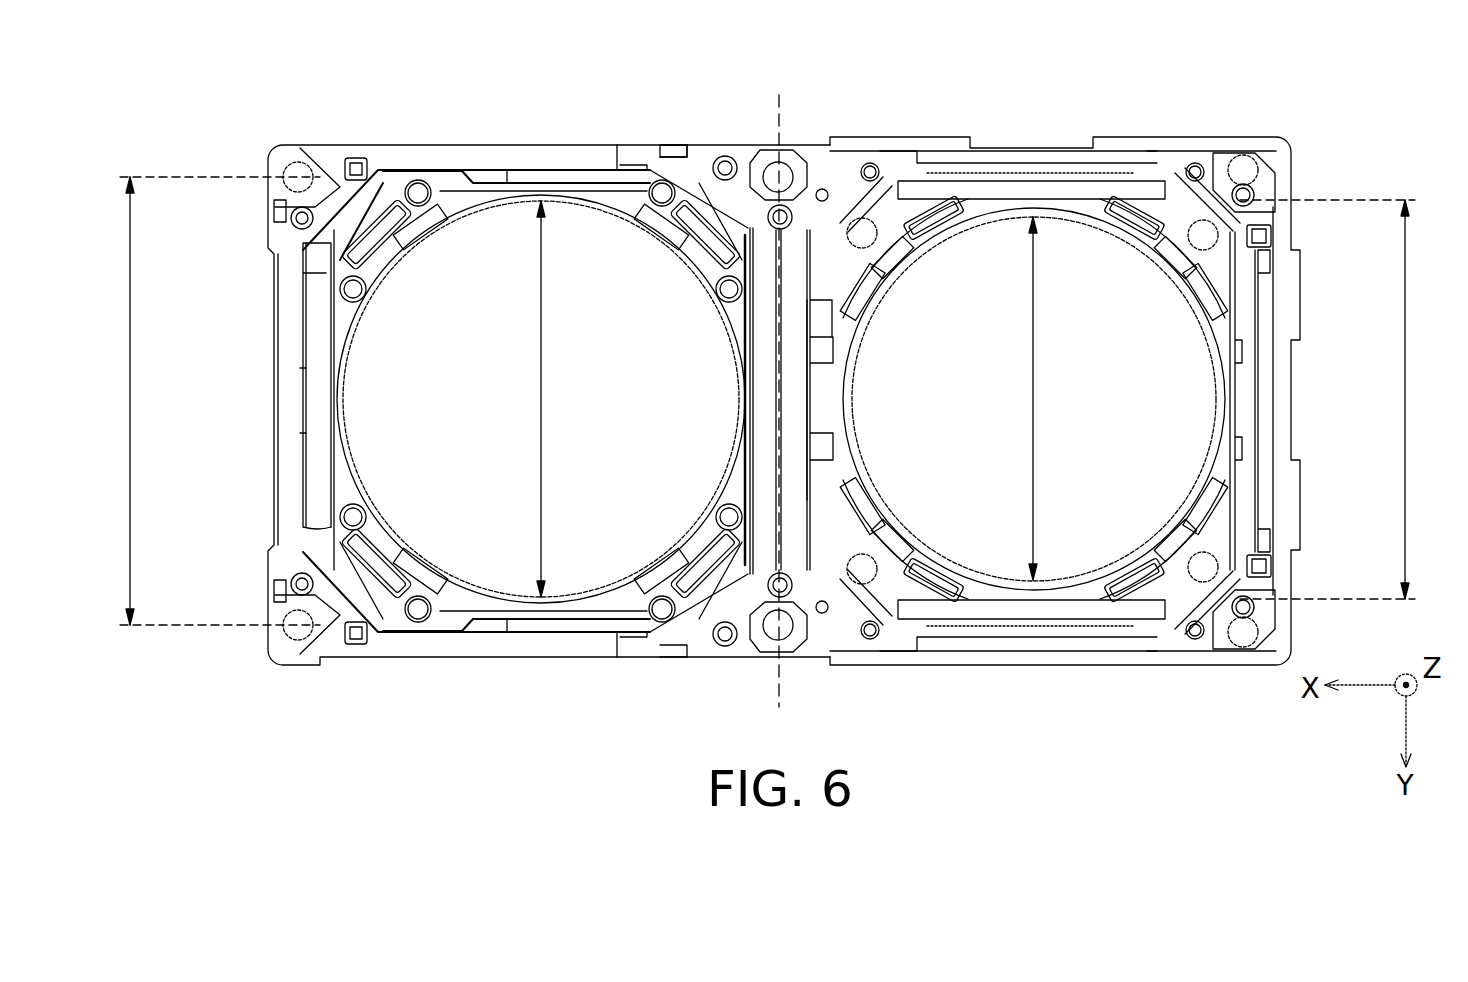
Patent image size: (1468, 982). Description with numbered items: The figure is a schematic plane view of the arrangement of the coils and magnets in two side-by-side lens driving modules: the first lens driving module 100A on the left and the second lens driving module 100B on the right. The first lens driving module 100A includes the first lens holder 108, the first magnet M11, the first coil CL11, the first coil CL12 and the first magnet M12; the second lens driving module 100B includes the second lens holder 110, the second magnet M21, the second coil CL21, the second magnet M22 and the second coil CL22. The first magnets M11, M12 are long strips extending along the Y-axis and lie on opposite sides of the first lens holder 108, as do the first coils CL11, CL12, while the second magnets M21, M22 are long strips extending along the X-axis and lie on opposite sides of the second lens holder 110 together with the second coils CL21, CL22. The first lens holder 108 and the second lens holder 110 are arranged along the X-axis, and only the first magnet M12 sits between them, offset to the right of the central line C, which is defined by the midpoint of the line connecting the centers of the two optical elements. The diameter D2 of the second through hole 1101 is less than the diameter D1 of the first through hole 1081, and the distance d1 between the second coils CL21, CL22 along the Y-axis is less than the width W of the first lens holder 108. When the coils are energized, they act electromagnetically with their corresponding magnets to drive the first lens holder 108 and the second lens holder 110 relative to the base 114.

The first lens driving module 100A is at (535, 142).
The second lens driving module 100B is at (1189, 131).
The first lens holder 108 is at (406, 190).
The first through hole 1081 is at (478, 580).
The base 114 is at (685, 160).
The second lens holder 110 is at (1225, 280).
The second through hole 1101 is at (1082, 580).
The central line C is at (779, 383).
The first magnet M11 is at (286, 342).
The first coil CL11 is at (314, 400).
The first coil CL12 is at (745, 400).
The first magnet M12 is at (795, 400).
The second magnet M21 is at (1115, 160).
The second coil CL21 is at (1013, 188).
The second coil CL22 is at (1013, 612).
The second magnet M22 is at (1115, 640).
The width W is at (208, 401).
The diameter D1 is at (518, 399).
The diameter D2 is at (1055, 398).
The distance d1 is at (1341, 399).